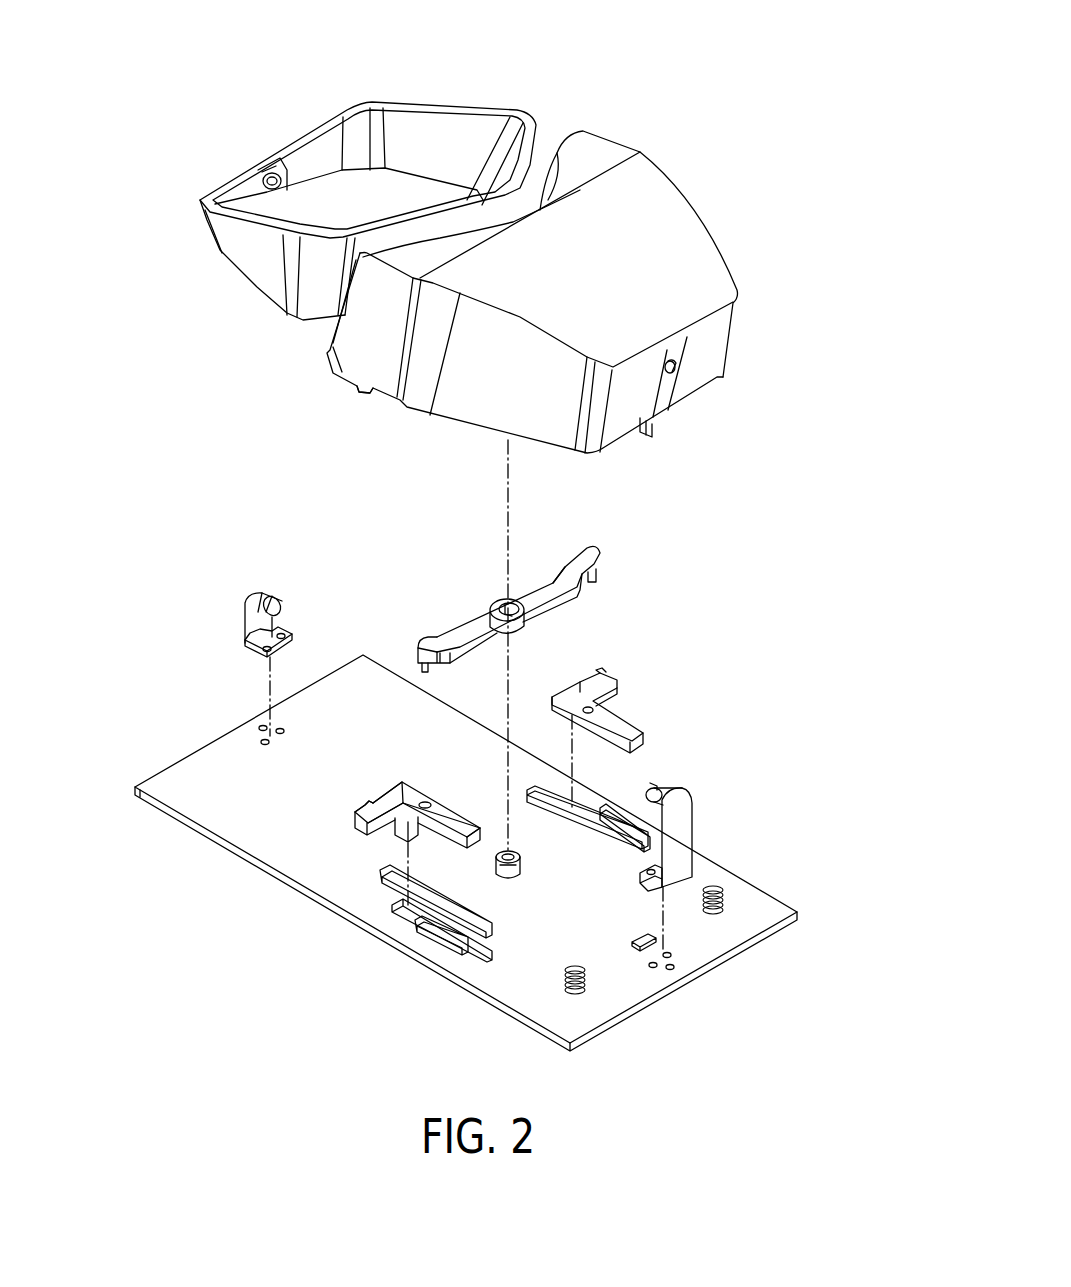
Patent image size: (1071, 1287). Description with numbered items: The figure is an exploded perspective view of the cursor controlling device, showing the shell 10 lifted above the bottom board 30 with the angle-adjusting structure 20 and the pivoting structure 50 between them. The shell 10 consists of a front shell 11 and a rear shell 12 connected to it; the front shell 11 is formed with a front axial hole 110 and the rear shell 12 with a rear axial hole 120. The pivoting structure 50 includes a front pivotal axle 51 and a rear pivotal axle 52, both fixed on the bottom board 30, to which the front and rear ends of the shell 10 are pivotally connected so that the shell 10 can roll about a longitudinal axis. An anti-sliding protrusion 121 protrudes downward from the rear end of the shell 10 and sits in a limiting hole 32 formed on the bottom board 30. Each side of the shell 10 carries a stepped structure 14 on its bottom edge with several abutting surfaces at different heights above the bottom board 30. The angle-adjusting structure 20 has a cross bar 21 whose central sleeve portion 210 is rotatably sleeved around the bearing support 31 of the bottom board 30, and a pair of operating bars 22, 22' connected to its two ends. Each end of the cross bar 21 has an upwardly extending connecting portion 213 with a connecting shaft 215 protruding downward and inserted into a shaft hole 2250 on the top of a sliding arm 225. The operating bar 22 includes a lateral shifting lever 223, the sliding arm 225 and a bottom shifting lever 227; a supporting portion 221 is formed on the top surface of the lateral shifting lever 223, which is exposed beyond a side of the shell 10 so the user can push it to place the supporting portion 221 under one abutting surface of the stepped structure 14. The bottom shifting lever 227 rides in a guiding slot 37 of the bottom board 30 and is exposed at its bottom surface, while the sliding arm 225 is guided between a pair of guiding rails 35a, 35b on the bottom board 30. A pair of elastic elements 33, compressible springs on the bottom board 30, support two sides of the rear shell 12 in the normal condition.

The shell 10 is at (610, 42).
The front shell 11 is at (472, 131).
The rear shell 12 is at (597, 157).
The front axial hole 110 is at (278, 158).
The rear axial hole 120 is at (713, 372).
The anti-sliding protrusion 121 is at (662, 432).
The stepped structure 14 is at (366, 392).
The angle-adjusting structure 20 is at (648, 693).
The cross bar 21 is at (475, 628).
The sleeve portion 210 is at (522, 624).
The connecting portion 213 is at (583, 556).
The connecting shaft 215 is at (597, 575).
The operating bar 22 is at (494, 769).
The operating bar 22' is at (650, 739).
The supporting portion 221 is at (386, 800).
The lateral shifting lever 223 is at (352, 820).
The sliding arm 225 is at (449, 842).
The bottom shifting lever 227 is at (399, 832).
The shaft hole 2250 is at (431, 803).
The bottom board 30 is at (178, 767).
The bearing support 31 is at (512, 871).
The limiting hole 32 is at (638, 946).
The elastic element 33 is at (722, 893).
The guiding rail 35a is at (446, 936).
The guiding rail 35b is at (395, 889).
The guiding slot 37 is at (413, 915).
The pivoting structure 50 is at (263, 522).
The front pivotal axle 51 is at (250, 596).
The rear pivotal axle 52 is at (696, 825).